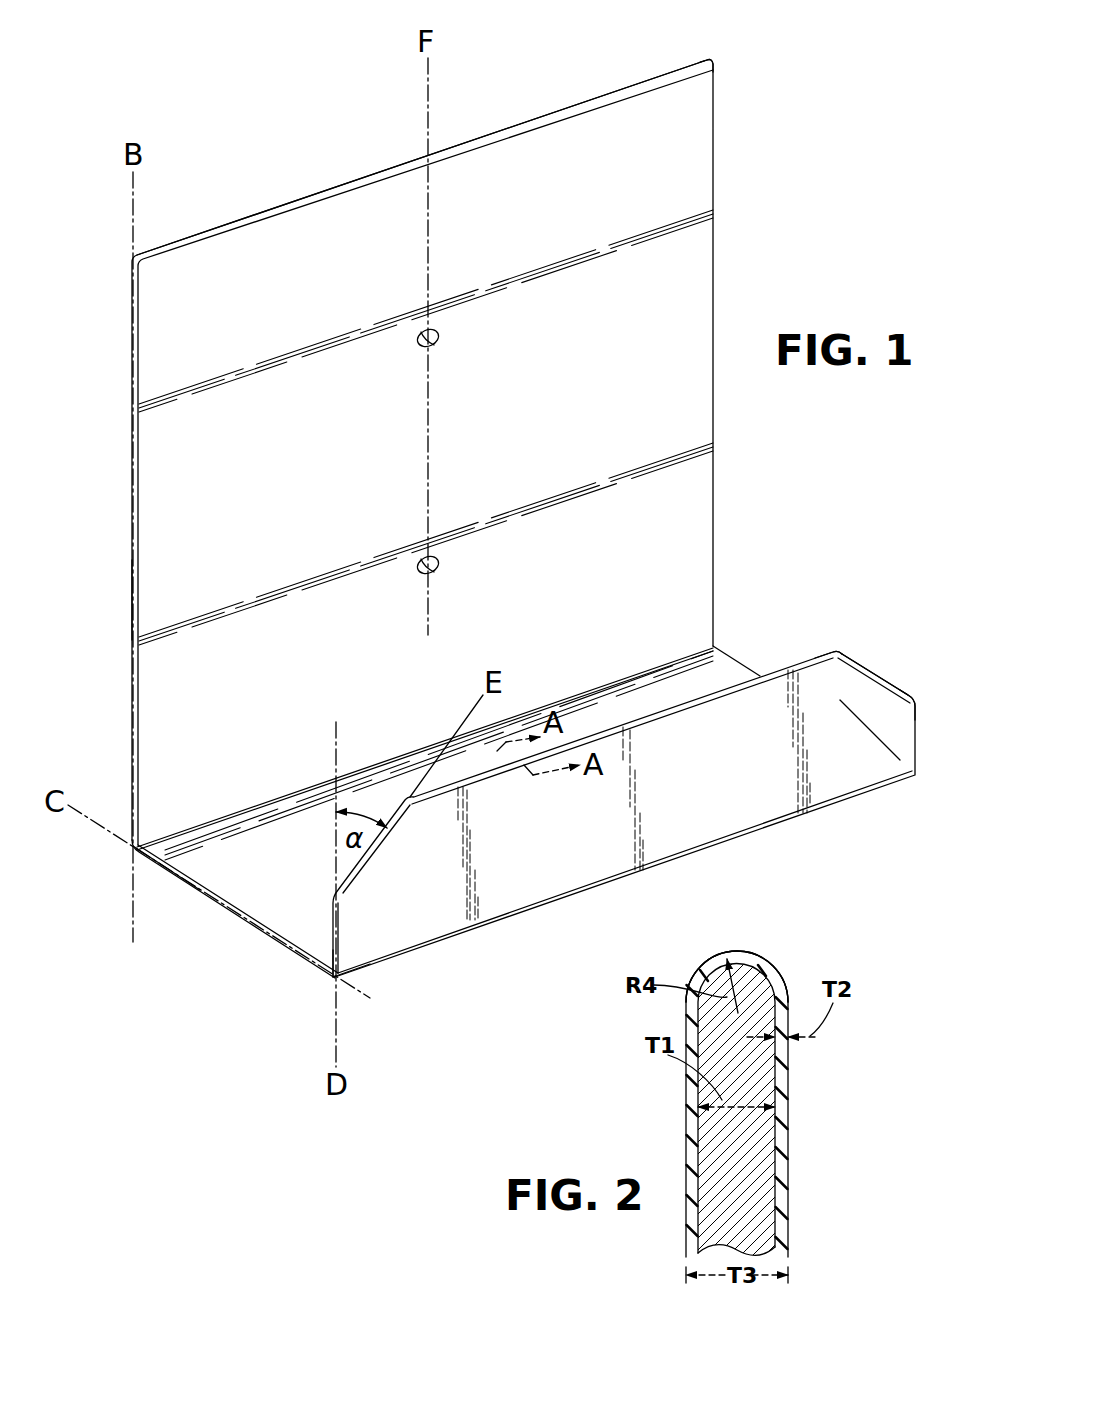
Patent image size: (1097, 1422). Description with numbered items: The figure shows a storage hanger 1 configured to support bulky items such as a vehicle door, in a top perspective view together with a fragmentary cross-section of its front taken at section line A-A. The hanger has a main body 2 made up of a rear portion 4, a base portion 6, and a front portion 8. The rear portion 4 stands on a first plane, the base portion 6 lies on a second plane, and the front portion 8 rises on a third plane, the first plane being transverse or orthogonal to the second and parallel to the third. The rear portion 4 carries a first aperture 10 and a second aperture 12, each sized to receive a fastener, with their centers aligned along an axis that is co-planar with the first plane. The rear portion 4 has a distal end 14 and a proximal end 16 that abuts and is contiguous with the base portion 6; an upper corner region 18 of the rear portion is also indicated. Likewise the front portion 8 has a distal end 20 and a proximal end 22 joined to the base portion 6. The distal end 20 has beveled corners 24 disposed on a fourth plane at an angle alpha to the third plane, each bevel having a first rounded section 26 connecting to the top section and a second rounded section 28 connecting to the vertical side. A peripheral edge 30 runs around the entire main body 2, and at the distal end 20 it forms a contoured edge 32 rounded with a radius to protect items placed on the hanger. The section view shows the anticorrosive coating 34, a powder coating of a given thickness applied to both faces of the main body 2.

In FIG. 1, the storage hanger 1 is at (305, 187).
In FIG. 1, the main body 2 is at (716, 268).
In FIG. 1, the rear portion 4 is at (688, 130).
In FIG. 1, the base portion 6 is at (288, 900).
In FIG. 1, the front portion 8 is at (832, 760).
In FIG. 1, the first aperture 10 is at (436, 343).
In FIG. 1, the second aperture 12 is at (436, 570).
In FIG. 1, the distal end 14 is at (567, 82).
In FIG. 1, the proximal end 16 is at (110, 852).
In FIG. 1, the upper corner of back panel 18 is at (717, 45).
In FIG. 1, the distal end 20 is at (667, 692).
In FIG. 2, the distal end 20 is at (782, 962).
In FIG. 1, the proximal end 22 is at (318, 978).
In FIG. 1, the beveled corners 24 is at (887, 665).
In FIG. 1, the first rounded section 26 is at (832, 637).
In FIG. 1, the second rounded section 28 is at (913, 697).
In FIG. 1, the peripheral edge 30 is at (131, 593).
In FIG. 2, the peripheral edge 30 is at (725, 952).
In FIG. 2, the contoured edge 32 is at (758, 947).
In FIG. 2, the anticorrosive coating 34 is at (778, 1161).